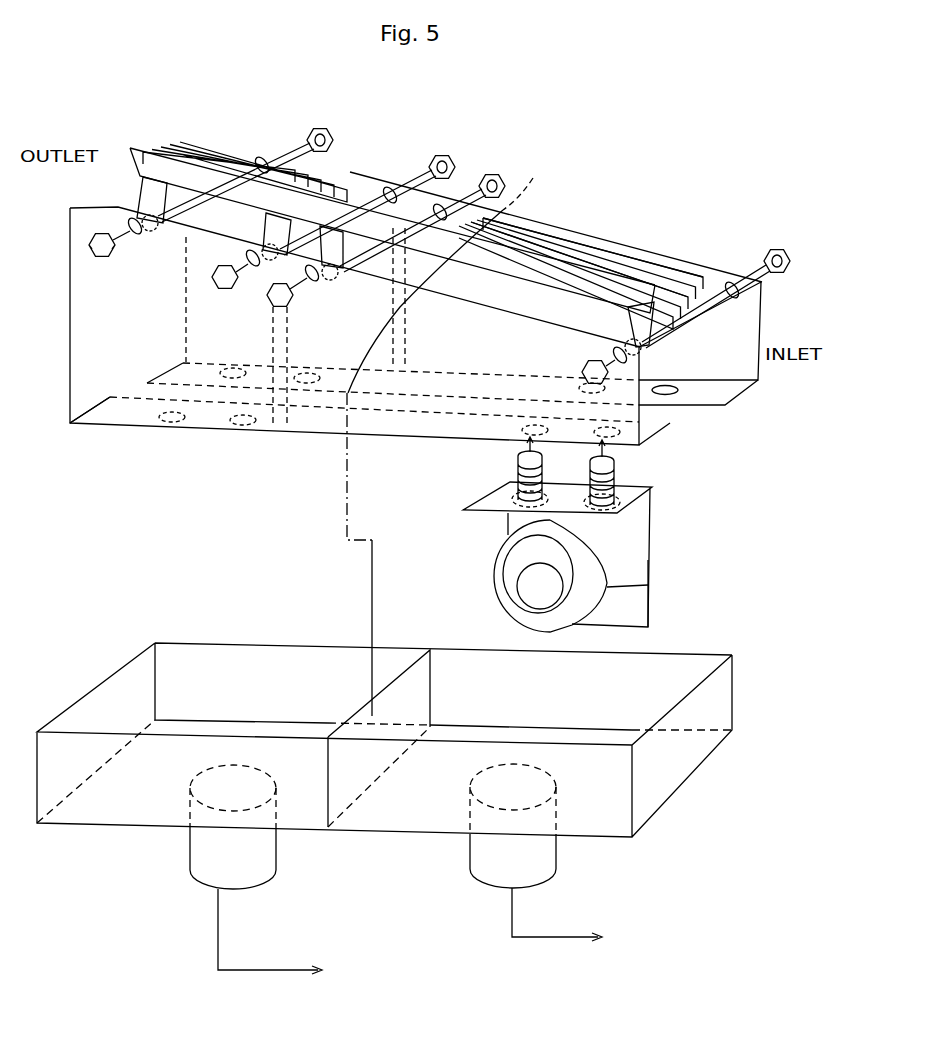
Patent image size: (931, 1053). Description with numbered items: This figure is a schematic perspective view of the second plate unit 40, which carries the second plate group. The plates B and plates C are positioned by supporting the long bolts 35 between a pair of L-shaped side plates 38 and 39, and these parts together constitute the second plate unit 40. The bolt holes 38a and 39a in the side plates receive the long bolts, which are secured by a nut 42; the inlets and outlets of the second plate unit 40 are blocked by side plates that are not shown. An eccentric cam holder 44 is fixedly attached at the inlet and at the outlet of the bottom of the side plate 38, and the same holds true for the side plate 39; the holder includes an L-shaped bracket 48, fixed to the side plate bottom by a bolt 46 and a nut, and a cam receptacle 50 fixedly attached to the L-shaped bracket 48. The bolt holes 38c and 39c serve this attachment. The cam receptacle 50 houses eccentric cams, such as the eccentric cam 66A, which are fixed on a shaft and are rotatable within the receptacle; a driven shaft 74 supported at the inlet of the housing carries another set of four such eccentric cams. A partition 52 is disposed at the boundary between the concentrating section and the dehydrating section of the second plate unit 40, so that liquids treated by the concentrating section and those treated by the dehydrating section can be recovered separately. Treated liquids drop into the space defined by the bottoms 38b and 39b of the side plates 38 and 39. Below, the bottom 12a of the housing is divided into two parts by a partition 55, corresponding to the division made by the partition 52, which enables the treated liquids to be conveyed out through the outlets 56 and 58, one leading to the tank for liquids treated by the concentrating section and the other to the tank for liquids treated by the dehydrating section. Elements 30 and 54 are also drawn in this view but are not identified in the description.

The bottom of the housing 12a is at (720, 688).
The filter plate 30 is at (560, 238).
The long bolt 35 is at (132, 220).
The side plate 38 is at (70, 268).
The bolt hole 38a is at (138, 240).
The bottom of side plate 38b is at (660, 430).
The bolt hole 38c is at (530, 425).
The side plate 39 is at (700, 298).
The bolt hole 39a is at (263, 158).
The bottom of side plate 39b is at (732, 406).
The bolt hole 39c is at (672, 383).
The second plate unit 40 is at (597, 222).
The nut 42 is at (332, 134).
The eccentric cam holder 44 is at (662, 544).
The bolt 46 is at (648, 472).
The L-shaped bracket 48 is at (652, 568).
The cam receptacle 50 is at (648, 585).
The partition 52 is at (452, 440).
The base plate 54 is at (450, 408).
The partition 55 is at (402, 687).
The outlet 56 is at (468, 848).
The outlet 58 is at (277, 860).
The eccentric cam 66A is at (515, 560).
The driven shaft 74 is at (528, 593).
The plates B is at (632, 258).
The plates C is at (235, 152).